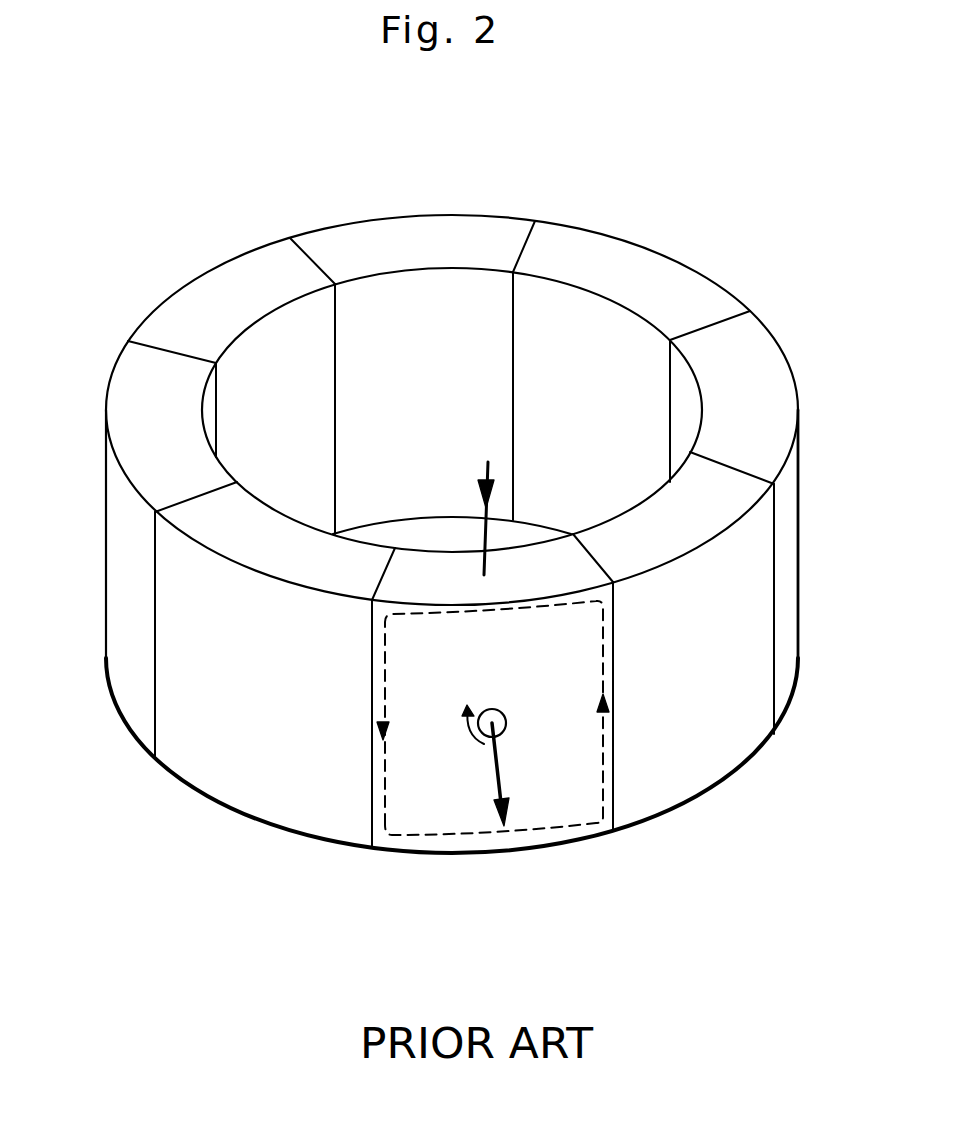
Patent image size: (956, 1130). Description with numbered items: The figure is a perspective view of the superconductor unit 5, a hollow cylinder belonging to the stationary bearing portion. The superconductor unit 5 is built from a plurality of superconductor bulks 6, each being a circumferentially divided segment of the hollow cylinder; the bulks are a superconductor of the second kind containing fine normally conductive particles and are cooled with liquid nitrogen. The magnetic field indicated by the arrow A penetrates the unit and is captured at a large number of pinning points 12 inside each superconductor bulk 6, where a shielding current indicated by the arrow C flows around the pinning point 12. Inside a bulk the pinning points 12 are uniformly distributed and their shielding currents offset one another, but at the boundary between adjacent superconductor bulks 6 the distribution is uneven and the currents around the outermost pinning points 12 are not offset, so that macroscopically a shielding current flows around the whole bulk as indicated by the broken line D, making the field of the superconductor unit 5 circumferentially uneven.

The superconductor unit 5 is at (322, 208).
The superconductor bulk 6 is at (413, 235).
The pinning point 12 is at (483, 733).
The broken line indicating shielding current D is at (542, 832).
The arrow indicating shielding current C is at (503, 710).
The arrow indicating magnetic field A is at (500, 773).